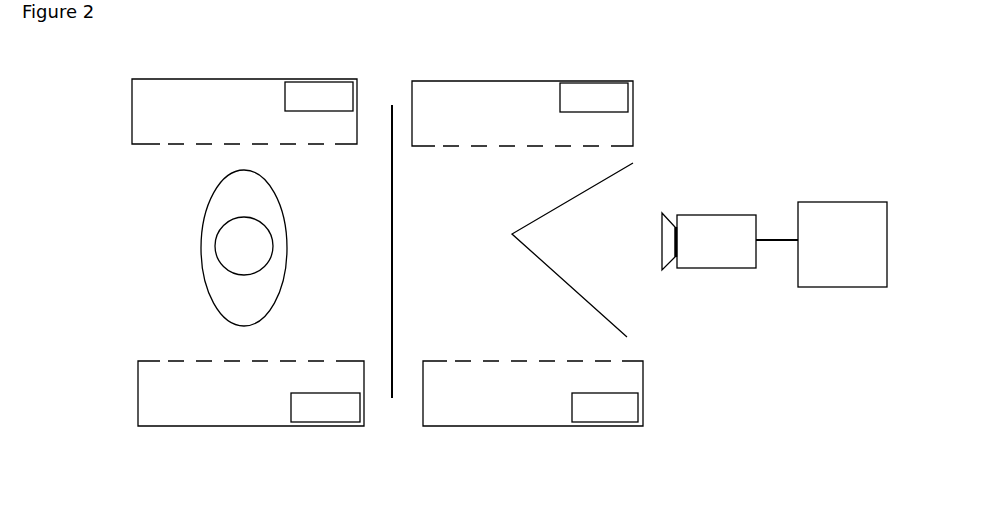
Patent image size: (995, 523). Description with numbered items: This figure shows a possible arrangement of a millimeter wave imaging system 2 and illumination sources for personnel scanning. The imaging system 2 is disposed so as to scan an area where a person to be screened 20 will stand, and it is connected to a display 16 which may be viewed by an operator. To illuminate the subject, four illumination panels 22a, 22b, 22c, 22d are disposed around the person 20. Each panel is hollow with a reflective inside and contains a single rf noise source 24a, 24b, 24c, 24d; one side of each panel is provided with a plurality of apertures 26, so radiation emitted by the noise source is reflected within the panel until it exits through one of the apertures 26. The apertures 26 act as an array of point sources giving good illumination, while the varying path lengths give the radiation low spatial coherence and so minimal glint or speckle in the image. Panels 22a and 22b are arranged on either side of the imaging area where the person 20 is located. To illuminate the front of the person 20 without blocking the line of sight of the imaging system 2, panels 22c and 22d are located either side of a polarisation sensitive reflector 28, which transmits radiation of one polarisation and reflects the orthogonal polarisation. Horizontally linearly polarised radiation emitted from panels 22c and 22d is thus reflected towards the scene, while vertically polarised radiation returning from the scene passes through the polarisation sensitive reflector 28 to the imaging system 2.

The millimeter wave imaging system 2 is at (703, 230).
The display 16 is at (844, 228).
The person to be screened 20 is at (219, 281).
The illumination panel 22a is at (213, 95).
The illumination panel 22b is at (239, 405).
The illumination panel 22c is at (496, 100).
The illumination panel 22d is at (489, 403).
The rf noise source 24a is at (310, 97).
The rf noise source 24b is at (323, 407).
The rf noise source 24c is at (598, 97).
The rf noise source 24d is at (611, 410).
The apertures 26 is at (196, 147).
The polarisation sensitive reflector 28 is at (553, 278).